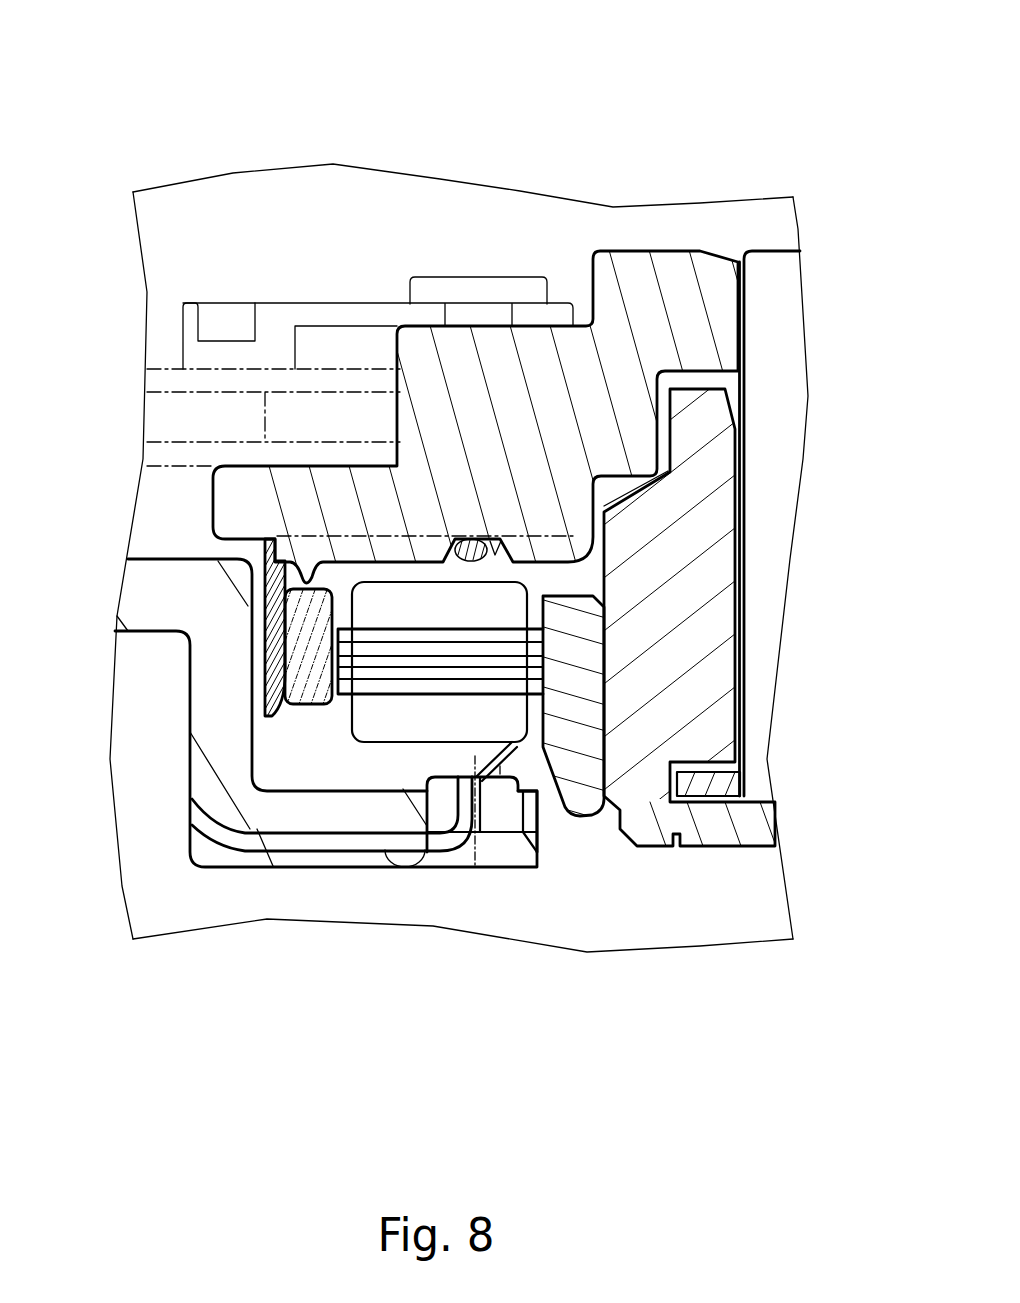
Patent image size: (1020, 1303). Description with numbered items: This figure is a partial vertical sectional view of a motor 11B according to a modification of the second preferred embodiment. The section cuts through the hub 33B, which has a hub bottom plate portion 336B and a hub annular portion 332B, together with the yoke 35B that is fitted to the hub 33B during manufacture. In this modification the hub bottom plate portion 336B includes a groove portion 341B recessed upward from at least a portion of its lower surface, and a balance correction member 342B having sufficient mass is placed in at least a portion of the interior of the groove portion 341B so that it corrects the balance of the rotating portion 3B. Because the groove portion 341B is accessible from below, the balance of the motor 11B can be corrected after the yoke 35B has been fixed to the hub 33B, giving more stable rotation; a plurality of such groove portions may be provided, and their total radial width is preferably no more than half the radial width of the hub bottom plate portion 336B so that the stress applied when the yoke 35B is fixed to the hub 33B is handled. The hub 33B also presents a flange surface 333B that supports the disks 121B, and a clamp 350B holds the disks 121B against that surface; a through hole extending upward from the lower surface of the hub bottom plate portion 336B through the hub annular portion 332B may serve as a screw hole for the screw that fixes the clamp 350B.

The rotating portion 3B is at (634, 170).
The motor 11B is at (553, 101).
The hub 33B is at (247, 110).
The hub annular portion 332B is at (414, 335).
The flange surface 333B is at (257, 467).
The clamp 350B is at (498, 293).
The groove portion 341B is at (516, 452).
The balance correction member 342B is at (621, 676).
The disks 121B is at (312, 777).
The yoke 35B is at (367, 841).
The hub bottom plate portion 336B is at (466, 826).